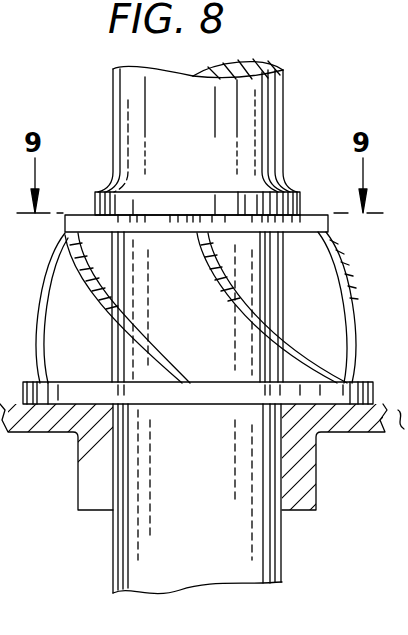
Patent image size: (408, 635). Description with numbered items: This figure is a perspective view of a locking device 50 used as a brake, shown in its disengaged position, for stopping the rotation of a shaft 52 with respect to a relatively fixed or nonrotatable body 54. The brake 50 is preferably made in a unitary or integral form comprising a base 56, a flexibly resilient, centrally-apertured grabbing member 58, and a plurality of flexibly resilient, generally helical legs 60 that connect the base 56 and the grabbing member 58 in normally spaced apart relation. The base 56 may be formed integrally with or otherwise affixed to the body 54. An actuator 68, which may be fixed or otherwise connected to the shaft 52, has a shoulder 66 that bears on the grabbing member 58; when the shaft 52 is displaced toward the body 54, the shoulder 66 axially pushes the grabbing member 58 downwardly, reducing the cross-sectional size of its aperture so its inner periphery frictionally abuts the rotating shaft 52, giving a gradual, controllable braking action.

The locking device 50 is at (33, 316).
The shaft 52 is at (125, 558).
The body 54 is at (83, 475).
The base 56 is at (25, 392).
The grabbing member 58 is at (66, 219).
The helical legs 60 is at (104, 321).
The shoulder 66 is at (298, 199).
The actuator 68 is at (263, 93).